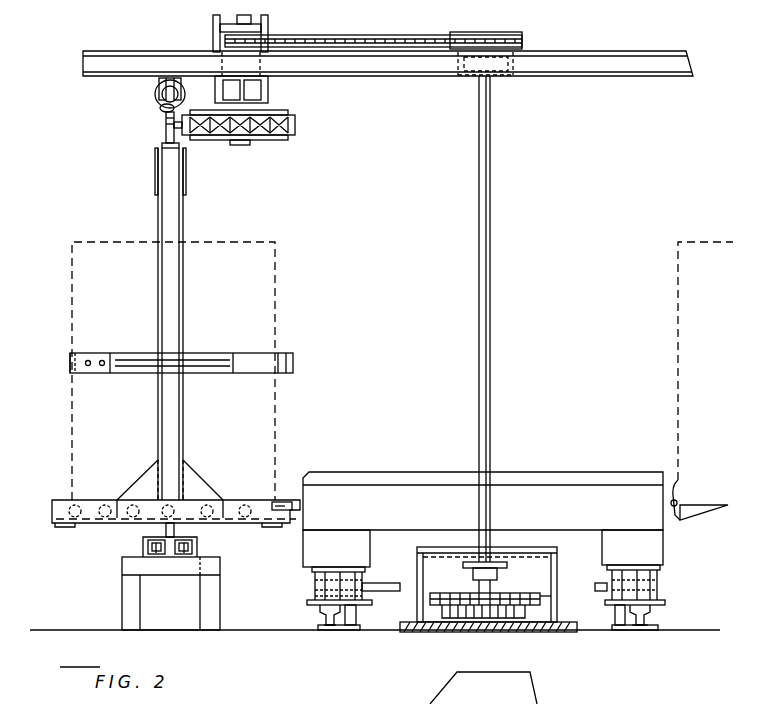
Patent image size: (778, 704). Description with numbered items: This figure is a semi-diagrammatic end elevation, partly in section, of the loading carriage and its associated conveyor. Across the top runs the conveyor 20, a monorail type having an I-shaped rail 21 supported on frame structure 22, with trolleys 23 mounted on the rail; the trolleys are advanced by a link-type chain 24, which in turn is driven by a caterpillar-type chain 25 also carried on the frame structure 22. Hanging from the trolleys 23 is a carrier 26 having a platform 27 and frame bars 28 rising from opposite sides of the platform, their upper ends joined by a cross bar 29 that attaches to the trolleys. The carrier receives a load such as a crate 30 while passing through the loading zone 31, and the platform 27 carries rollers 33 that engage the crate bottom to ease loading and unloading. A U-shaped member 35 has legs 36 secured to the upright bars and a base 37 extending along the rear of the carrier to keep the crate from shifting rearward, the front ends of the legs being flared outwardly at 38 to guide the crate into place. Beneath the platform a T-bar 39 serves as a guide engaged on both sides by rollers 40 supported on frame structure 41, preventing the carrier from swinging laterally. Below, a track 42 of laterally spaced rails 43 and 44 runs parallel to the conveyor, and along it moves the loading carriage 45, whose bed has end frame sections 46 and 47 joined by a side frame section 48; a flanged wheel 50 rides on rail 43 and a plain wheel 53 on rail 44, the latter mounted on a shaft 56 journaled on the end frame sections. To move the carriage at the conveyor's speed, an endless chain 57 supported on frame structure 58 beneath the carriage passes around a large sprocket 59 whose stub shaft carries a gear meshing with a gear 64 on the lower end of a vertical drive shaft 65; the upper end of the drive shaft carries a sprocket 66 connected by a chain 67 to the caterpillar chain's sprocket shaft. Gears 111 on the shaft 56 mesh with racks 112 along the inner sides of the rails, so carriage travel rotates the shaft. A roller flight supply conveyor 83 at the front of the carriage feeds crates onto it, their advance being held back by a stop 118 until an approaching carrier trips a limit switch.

The conveyor 20 is at (153, 93).
The I-shaped rail 21 is at (166, 80).
The frame structure 22 is at (447, 77).
The trolleys 23 is at (161, 109).
The link-type chain 24 is at (166, 131).
The caterpillar-type chain 25 is at (298, 125).
The carrier 26 is at (186, 231).
The platform 27 is at (53, 500).
The frame bars 28 is at (180, 318).
The cross bar 29 is at (156, 168).
The crate 30 is at (276, 322).
The loading zone 31 is at (565, 433).
The rollers 33 is at (103, 500).
The U-shaped member 35 is at (104, 351).
The legs 36 is at (224, 353).
The base 37 is at (70, 365).
The flared front ends 38 is at (294, 364).
The T-bar guide 39 is at (145, 536).
The rollers 40 is at (182, 555).
The frame structure 41 is at (220, 611).
The track 42 is at (322, 618).
The rail 43 is at (348, 622).
The rail 44 is at (645, 621).
The loading carriage 45 is at (605, 471).
The end frame section 46 is at (304, 556).
The end frame section 47 is at (664, 556).
The side frame section 48 is at (381, 496).
The flanged wheel 50 is at (330, 578).
The plain wheel 53 is at (660, 584).
The shaft 56 is at (388, 582).
The endless chain 57 is at (545, 597).
The frame structure 58 is at (533, 547).
The sprocket 59 is at (512, 597).
The gear 64 is at (504, 632).
The vertical drive shaft 65 is at (488, 397).
The sprocket 66 is at (524, 41).
The chain 67 is at (410, 38).
The roller flight supply conveyor 83 is at (688, 491).
The gears 111 is at (365, 603).
The racks 112 is at (358, 614).
The stop 118 is at (678, 480).